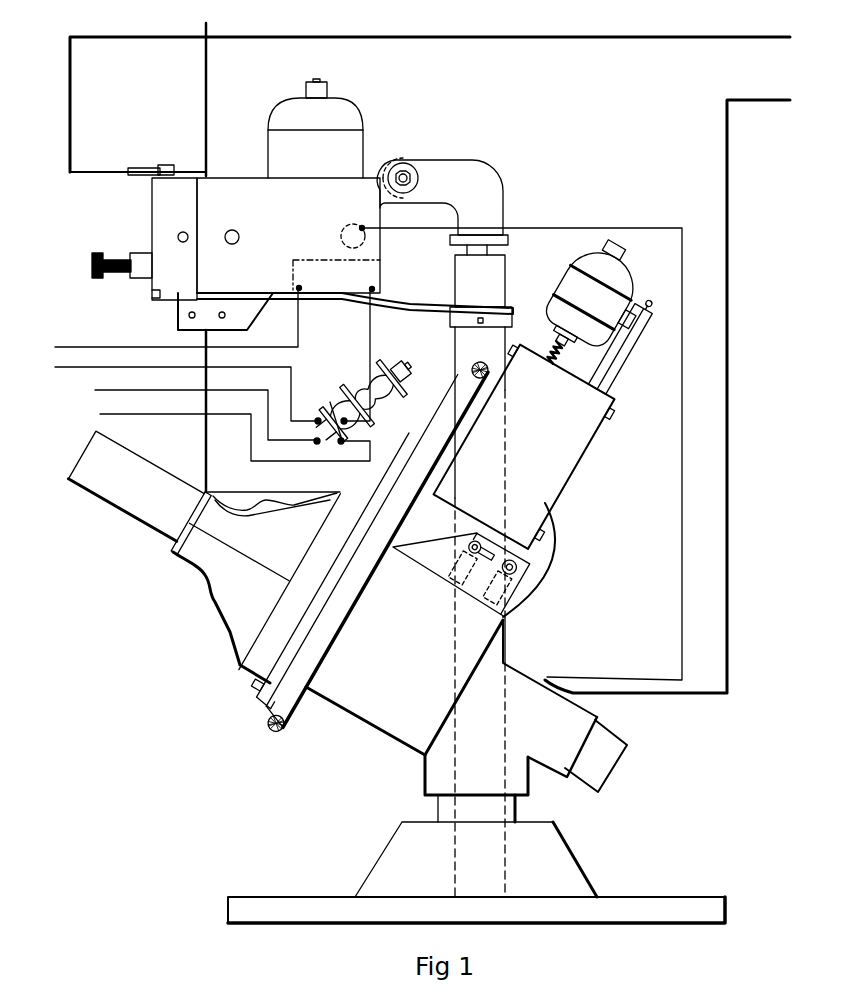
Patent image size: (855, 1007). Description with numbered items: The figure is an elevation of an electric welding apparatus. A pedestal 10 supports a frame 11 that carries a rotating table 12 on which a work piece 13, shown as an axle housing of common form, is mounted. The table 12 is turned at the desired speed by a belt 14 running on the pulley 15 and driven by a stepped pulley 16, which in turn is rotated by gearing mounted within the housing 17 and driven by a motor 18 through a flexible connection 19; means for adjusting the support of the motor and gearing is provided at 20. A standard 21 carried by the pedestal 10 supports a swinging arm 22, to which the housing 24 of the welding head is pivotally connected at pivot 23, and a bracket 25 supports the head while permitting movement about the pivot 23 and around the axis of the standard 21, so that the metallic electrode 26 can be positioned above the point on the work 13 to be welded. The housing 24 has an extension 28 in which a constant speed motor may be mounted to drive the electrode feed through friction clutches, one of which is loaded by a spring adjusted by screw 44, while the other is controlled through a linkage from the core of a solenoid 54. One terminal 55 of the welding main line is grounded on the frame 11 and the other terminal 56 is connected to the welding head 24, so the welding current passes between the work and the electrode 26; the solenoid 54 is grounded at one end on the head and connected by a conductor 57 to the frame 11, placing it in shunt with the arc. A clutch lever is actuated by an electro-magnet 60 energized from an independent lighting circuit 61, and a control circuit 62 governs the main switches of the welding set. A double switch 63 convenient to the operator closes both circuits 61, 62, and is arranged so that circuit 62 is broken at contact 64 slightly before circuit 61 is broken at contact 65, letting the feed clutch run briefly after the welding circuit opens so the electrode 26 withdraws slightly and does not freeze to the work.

The pedestal 10 is at (335, 897).
The frame 11 is at (352, 710).
The rotating table 12 is at (295, 715).
The work piece 13 is at (240, 672).
The belt 14 is at (268, 735).
The pulley 15 is at (258, 728).
The stepped pulley 16 is at (463, 422).
The housing 17 is at (575, 460).
The motor 18 is at (622, 283).
The flexible connection 19 is at (565, 358).
The adjusting means 20 is at (517, 568).
The standard 21 is at (503, 277).
The swinging arm 22 is at (493, 188).
The pivot 23 is at (410, 173).
The housing 24 is at (372, 182).
The bracket 25 is at (410, 303).
The metallic electrode 26 is at (207, 108).
The extension 28 is at (350, 112).
The screw 44 is at (236, 231).
The solenoid 54 is at (345, 228).
The terminal 55 is at (778, 106).
The terminal 56 is at (745, 43).
The conductor 57 is at (641, 228).
The electro-magnet 60 is at (306, 258).
The lighting circuit 61 is at (90, 365).
The control circuit 62 is at (100, 414).
The double switch 63 is at (338, 418).
The contact 64 is at (318, 444).
The contact 65 is at (318, 418).